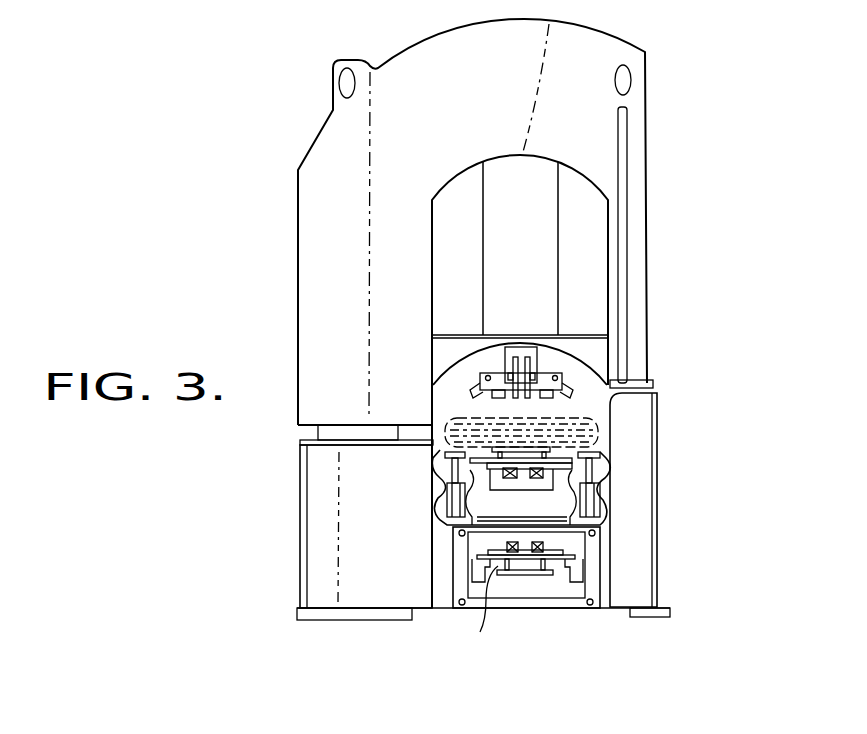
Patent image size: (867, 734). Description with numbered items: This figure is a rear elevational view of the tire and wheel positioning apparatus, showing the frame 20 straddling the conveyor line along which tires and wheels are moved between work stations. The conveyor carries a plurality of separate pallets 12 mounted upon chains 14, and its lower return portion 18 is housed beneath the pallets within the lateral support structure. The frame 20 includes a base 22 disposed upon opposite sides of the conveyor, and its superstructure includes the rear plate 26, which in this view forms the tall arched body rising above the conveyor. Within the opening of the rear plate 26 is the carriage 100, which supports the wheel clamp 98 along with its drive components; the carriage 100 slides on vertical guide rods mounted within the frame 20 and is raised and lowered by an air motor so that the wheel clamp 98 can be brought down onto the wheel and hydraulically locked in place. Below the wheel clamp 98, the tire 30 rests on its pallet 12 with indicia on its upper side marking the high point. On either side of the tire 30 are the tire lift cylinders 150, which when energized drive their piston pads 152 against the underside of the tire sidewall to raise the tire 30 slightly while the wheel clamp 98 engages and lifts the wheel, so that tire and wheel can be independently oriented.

The pallet 12 is at (540, 450).
The chain 14 is at (556, 488).
The return portion 18 is at (480, 632).
The frame 20 is at (297, 513).
The base 22 is at (395, 561).
The rear plate 26 is at (518, 101).
The tire 30 is at (597, 436).
The wheel clamp 98 is at (518, 357).
The carriage 100 is at (474, 306).
The tire lift cylinder 150 is at (452, 500).
The piston pad 152 is at (445, 457).